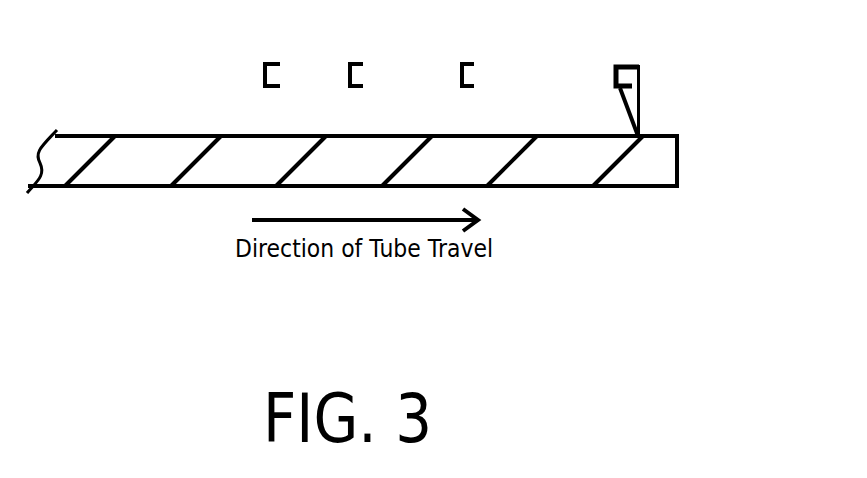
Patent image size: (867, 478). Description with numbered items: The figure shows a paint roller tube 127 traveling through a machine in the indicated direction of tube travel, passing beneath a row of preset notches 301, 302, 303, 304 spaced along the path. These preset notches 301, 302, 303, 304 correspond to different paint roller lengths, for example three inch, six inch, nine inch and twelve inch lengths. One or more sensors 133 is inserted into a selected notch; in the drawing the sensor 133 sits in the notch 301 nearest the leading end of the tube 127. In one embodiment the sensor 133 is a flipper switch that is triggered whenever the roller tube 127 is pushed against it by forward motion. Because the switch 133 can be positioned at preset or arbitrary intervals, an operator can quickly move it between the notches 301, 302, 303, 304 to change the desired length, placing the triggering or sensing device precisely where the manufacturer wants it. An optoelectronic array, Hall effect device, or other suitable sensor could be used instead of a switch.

The paint roller tube 127 is at (678, 162).
The sensor 133 is at (641, 100).
The preset notch 301 is at (617, 64).
The preset notch 302 is at (471, 62).
The preset notch 303 is at (361, 62).
The preset notch 304 is at (277, 62).